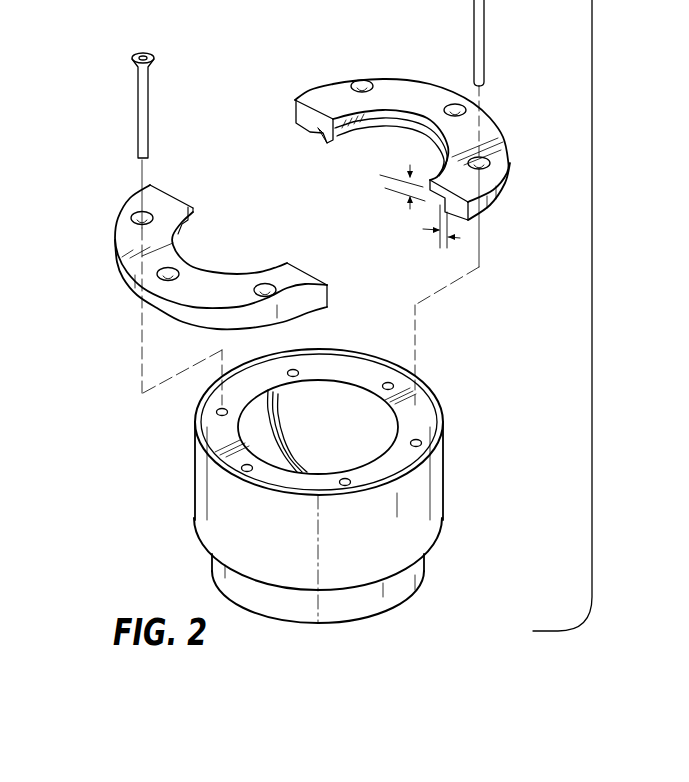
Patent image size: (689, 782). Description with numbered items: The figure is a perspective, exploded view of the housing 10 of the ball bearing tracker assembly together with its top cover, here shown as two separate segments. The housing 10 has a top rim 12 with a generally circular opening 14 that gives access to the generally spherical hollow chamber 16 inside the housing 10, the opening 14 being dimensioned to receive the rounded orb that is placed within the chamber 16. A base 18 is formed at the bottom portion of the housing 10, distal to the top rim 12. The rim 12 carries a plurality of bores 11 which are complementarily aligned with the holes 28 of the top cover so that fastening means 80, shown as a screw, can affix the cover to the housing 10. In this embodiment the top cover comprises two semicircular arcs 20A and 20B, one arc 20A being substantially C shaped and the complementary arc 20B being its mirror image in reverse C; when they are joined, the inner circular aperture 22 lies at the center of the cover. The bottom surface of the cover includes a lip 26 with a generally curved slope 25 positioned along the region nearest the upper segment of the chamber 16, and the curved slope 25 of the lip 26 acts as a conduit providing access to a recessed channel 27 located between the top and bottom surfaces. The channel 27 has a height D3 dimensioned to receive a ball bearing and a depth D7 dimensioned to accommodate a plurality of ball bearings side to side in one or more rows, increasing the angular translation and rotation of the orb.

The housing 10 is at (324, 466).
The bores 11 is at (433, 437).
The top rim 12 is at (213, 423).
The circular opening 14 is at (432, 408).
The spherical hollow chamber 16 is at (350, 407).
The base 18 is at (400, 588).
The semicircular arc 20A is at (191, 243).
The semicircular arc 20B is at (423, 153).
The circular aperture 22 is at (295, 215).
The curved slope 25 is at (432, 208).
The lip 26 is at (348, 140).
The recessed channel 27 is at (325, 138).
The holes 28 is at (358, 83).
The fastening means 80 is at (137, 103).
The height D3 is at (381, 176).
The depth D7 is at (440, 248).